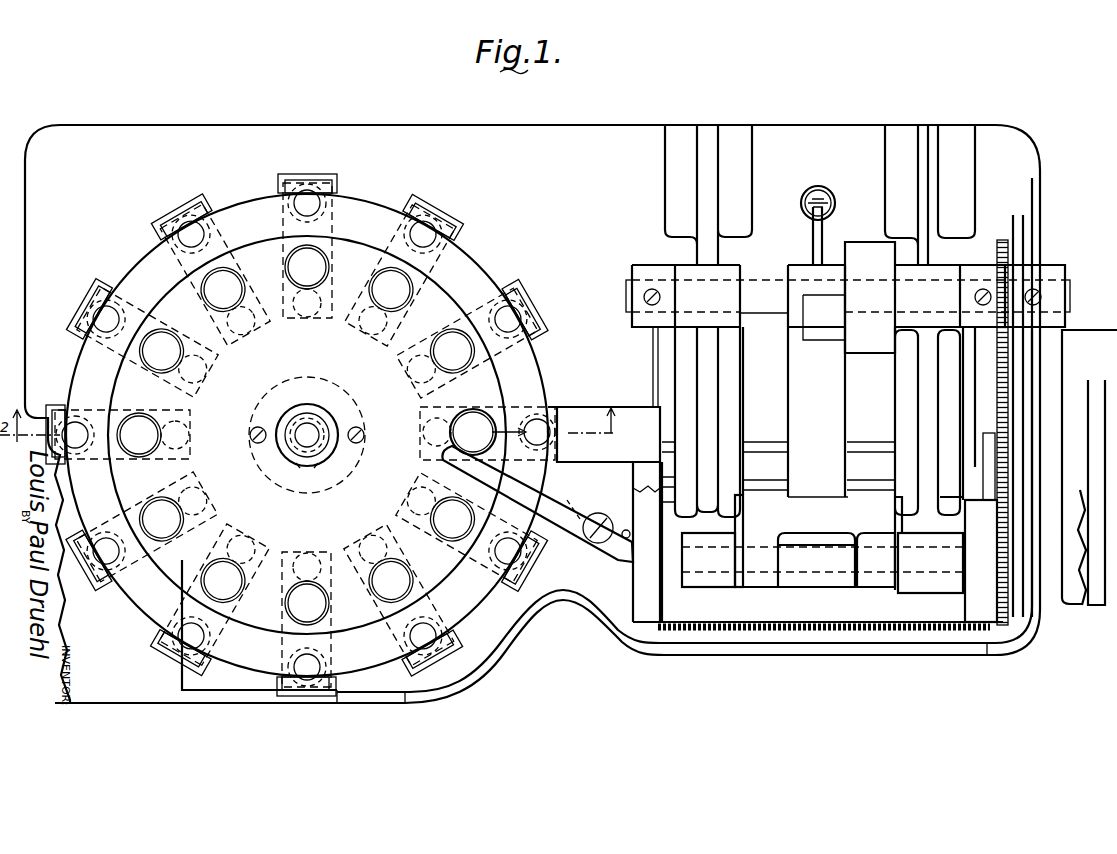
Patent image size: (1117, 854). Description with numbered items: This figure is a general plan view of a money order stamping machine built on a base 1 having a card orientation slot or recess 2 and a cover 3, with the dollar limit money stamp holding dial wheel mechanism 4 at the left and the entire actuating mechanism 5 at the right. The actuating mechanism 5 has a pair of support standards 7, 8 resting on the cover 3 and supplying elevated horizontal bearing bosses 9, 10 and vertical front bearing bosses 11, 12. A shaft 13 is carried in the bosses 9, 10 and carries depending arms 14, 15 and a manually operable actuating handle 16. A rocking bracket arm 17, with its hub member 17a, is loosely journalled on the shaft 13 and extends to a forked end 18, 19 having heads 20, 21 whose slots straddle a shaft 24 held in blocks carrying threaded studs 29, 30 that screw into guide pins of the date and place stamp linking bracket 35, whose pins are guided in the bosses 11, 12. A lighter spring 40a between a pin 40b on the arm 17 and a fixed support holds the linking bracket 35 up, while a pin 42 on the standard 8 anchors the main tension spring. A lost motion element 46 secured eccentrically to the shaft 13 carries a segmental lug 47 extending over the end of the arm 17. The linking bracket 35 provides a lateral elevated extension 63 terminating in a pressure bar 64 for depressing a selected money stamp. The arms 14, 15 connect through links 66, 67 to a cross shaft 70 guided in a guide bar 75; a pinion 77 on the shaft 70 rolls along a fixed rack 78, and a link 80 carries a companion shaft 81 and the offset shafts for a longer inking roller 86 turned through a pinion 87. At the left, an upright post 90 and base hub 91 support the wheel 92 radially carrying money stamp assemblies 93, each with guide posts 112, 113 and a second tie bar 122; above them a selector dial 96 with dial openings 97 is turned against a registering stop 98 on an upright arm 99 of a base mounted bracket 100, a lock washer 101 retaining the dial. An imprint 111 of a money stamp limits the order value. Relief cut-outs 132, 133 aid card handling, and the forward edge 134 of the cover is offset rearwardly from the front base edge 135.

The base 1 is at (133, 695).
The money order card orientation slot or recess 2 is at (405, 705).
The cover 3 is at (207, 692).
The dollar limit money stamp holding dial wheel mechanism 4 is at (325, 435).
The actuating mechanism 5 is at (845, 182).
The support standard 7 is at (665, 190).
The support standard 8 is at (960, 183).
The bearing boss 9 is at (682, 268).
The bearing boss 10 is at (945, 262).
The front bearing boss 11 is at (738, 523).
The front bearing boss 12 is at (895, 528).
The shaft 13 is at (758, 302).
The depending arm 14 is at (634, 272).
The depending arm 15 is at (986, 262).
The actuating handle 16 is at (1065, 380).
The rocking bracket arm 17 is at (795, 400).
The hub member 17a is at (797, 268).
The forked end 18 is at (765, 490).
The forked end 19 is at (878, 492).
The head 20 is at (755, 588).
The head 21 is at (868, 588).
The shaft 24 is at (805, 572).
The threaded stud 29 is at (700, 587).
The threaded stud 30 is at (918, 590).
The linking bracket 35 is at (655, 640).
The lighter spring 40a is at (806, 195).
The pin 40b is at (812, 240).
The pin 42 is at (950, 520).
The lost motion element 46 is at (858, 242).
The segmental lug 47 is at (805, 340).
The lateral and elevated extension 63 is at (640, 490).
The pressure bar 64 is at (620, 405).
The link 66 is at (655, 350).
The link 67 is at (975, 343).
The cross shaft 70 is at (860, 440).
The guide bar 75 is at (1020, 467).
The pinion 77 is at (1010, 428).
The fixed rack 78 is at (1008, 352).
The link 80 is at (988, 495).
The companion shaft 81 is at (838, 497).
The inking roller 86 is at (835, 640).
The pinion 87 is at (1000, 580).
The upright post 90 is at (308, 415).
The base hub 91 is at (318, 492).
The wheel 92 is at (88, 580).
The money stamp assembly 93 is at (158, 638).
The selector dial 96 is at (480, 270).
The dial opening 97 is at (385, 258).
The registering stop 98 is at (537, 504).
The upright arm 99 is at (578, 530).
The base mounted bracket 100 is at (628, 550).
The lock washer 101 is at (330, 410).
The imprint of a stamp 111 is at (330, 196).
The guide post 112 is at (92, 347).
The guide post 113 is at (180, 375).
The second tie bar 122 is at (105, 318).
The relief cut-out 132 is at (505, 645).
The relief cut-out 133 is at (520, 608).
The forward edge 134 is at (745, 656).
The front base edge 135 is at (695, 658).